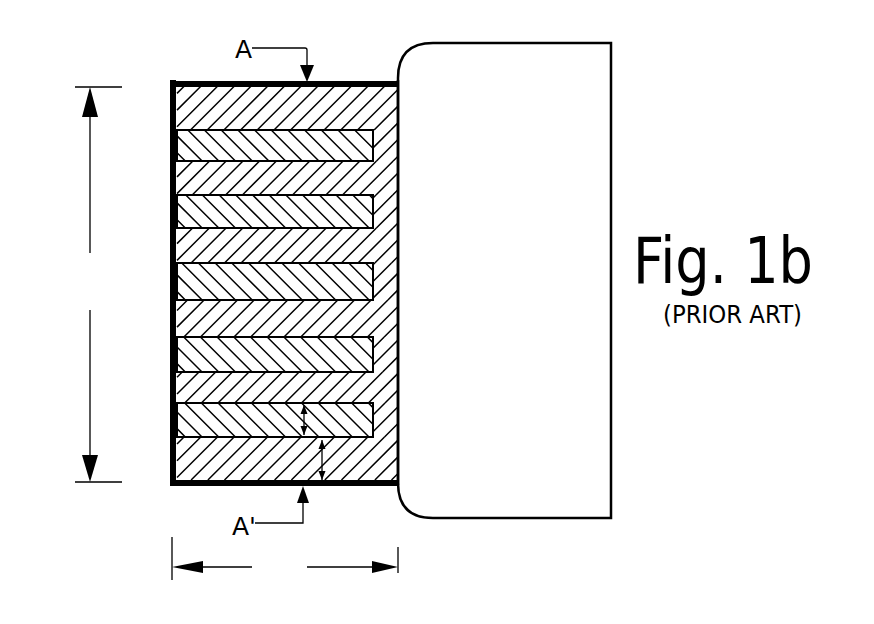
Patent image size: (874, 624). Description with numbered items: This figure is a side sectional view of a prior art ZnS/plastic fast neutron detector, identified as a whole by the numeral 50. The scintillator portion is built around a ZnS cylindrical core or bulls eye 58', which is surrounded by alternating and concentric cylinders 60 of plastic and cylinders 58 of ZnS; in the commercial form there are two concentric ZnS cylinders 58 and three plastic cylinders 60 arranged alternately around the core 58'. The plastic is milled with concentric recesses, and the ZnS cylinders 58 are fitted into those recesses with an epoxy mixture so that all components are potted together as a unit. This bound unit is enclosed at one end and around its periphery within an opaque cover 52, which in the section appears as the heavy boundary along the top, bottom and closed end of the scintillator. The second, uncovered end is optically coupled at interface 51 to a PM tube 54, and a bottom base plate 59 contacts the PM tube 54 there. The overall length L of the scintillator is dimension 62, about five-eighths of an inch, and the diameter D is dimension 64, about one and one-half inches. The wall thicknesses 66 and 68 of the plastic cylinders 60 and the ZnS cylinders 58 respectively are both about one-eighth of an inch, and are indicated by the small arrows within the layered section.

The detector 50 is at (366, 56).
The interface 51 is at (398, 172).
The opaque cover 52 is at (168, 463).
The PM tube 54 is at (535, 60).
The cylinders of ZnS 58 is at (326, 370).
The ZnS cylindrical core 58' is at (330, 285).
The bottom base plate 59 is at (388, 131).
The cylinders of plastic 60 is at (298, 282).
The length dimension 62 is at (330, 567).
The diameter dimension 64 is at (90, 357).
The wall thickness of plastic cylinders 66 is at (305, 418).
The wall thickness of ZnS cylinders 68 is at (338, 410).